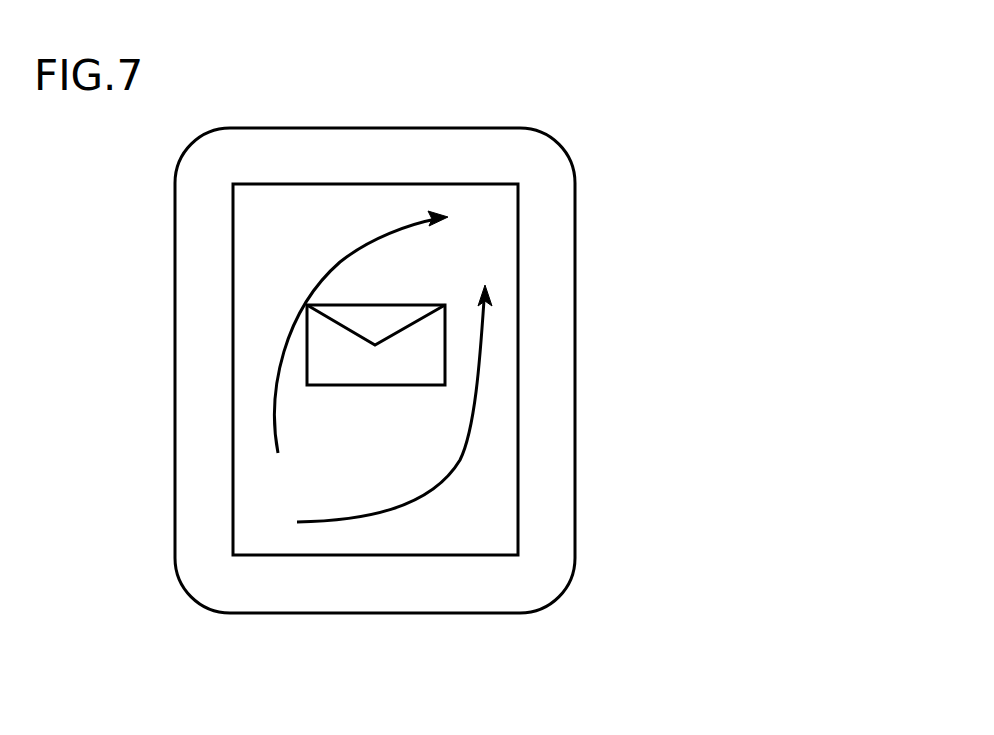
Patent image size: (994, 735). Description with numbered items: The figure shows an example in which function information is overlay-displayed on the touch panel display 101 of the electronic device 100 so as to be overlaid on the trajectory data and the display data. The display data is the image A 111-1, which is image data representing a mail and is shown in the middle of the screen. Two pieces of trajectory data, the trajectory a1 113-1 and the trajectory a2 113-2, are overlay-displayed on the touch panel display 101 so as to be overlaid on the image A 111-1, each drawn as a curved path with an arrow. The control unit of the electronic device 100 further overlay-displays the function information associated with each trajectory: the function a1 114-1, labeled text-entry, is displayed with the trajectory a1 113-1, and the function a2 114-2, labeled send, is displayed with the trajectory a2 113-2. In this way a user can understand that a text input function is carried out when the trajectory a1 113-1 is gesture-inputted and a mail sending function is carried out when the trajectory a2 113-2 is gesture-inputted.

The electronic device 100 is at (463, 97).
The touch panel display 101 is at (490, 208).
The image A 111-1 is at (417, 302).
The trajectory a1 113-1 is at (302, 297).
The trajectory a2 113-2 is at (477, 415).
The function a1 114-1 is at (300, 213).
The function a2 114-2 is at (445, 537).